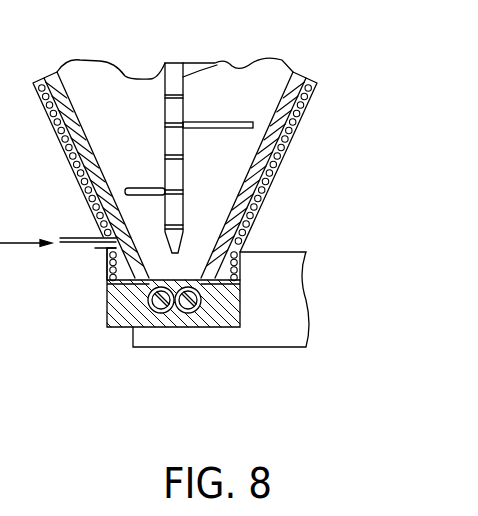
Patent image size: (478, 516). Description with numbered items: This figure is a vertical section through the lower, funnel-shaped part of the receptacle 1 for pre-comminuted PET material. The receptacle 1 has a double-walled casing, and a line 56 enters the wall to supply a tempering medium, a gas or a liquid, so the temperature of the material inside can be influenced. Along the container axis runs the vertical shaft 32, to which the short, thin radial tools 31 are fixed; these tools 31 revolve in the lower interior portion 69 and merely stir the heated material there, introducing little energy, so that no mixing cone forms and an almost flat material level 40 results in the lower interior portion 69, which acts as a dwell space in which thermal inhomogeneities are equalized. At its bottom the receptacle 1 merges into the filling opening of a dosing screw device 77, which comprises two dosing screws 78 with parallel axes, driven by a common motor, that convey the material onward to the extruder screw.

The receptacle 1 is at (272, 200).
The material level 40 is at (157, 76).
The vertical shaft 32 is at (175, 117).
The lower interior portion 69 is at (130, 125).
The tools 31 is at (140, 187).
The line 56 is at (82, 238).
The dosing screw device 77 is at (143, 313).
The dosing screws 78 is at (150, 301).